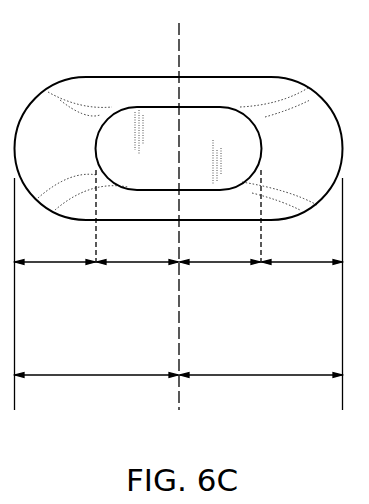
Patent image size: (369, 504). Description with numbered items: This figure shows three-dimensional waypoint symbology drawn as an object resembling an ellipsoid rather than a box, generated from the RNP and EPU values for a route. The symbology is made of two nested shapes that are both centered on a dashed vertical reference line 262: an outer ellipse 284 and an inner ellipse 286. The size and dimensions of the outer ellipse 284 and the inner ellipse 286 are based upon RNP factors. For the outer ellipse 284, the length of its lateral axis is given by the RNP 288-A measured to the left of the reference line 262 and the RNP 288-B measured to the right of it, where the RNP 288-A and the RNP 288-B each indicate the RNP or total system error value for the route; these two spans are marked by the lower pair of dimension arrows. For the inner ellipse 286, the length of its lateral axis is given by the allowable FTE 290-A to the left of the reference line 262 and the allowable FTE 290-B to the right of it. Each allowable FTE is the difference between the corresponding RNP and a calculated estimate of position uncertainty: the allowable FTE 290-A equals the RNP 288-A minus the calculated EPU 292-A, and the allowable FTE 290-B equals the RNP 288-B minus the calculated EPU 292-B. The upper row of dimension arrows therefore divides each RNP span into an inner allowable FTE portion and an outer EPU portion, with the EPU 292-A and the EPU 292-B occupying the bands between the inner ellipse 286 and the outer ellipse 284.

The outer ellipse 284 is at (53, 87).
The inner ellipse 286 is at (112, 118).
The reference line 262 is at (181, 41).
The calculated EPU 292-A is at (58, 265).
The allowable FTE 290-A is at (134, 265).
The allowable FTE 290-B is at (222, 265).
The calculated EPU 292-B is at (300, 265).
The RNP 288-A is at (89, 379).
The RNP 288-B is at (260, 379).